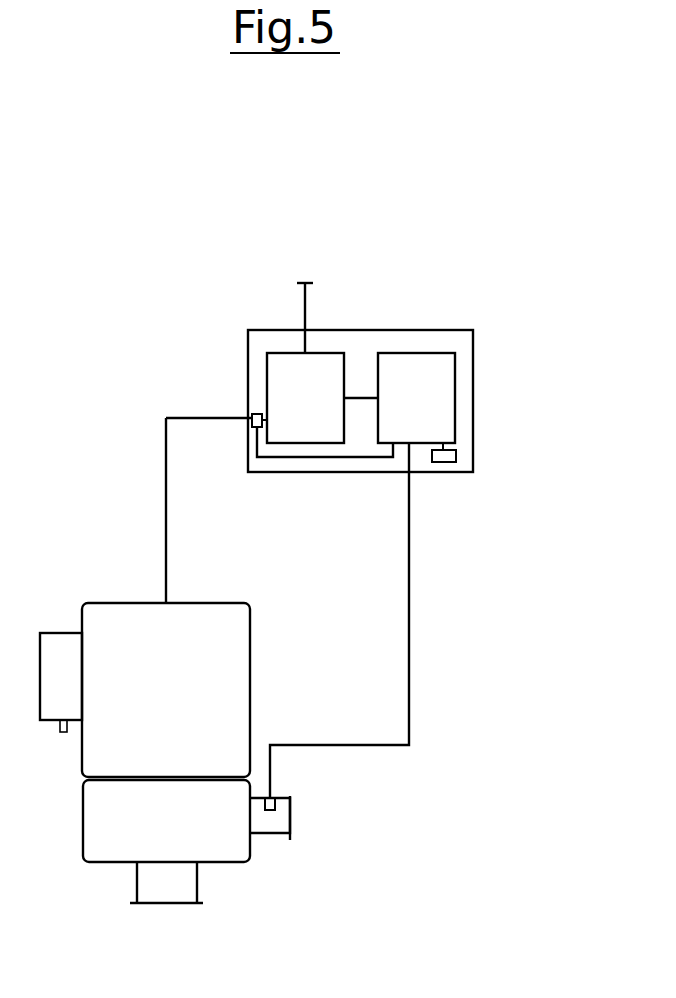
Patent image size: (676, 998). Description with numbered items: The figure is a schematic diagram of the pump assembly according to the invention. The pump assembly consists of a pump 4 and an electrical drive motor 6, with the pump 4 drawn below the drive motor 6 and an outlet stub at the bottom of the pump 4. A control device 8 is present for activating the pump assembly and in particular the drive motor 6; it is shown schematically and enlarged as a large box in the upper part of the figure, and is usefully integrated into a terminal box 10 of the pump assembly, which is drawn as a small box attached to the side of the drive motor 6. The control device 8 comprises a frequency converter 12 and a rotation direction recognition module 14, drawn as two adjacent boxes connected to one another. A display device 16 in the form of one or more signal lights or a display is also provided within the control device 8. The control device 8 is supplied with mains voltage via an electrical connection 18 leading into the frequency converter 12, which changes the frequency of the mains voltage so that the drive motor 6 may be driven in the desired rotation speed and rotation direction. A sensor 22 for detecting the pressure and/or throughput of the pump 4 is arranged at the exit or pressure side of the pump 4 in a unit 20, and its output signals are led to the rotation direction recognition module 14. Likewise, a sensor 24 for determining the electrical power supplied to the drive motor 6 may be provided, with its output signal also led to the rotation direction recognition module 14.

The pump 4 is at (153, 835).
The electrical drive motor 6 is at (152, 707).
The control device 8 is at (394, 330).
The terminal box 10 is at (61, 682).
The frequency converter 12 is at (305, 398).
The rotation direction recognition module 14 is at (416, 398).
The display device 16 is at (457, 453).
The electrical connection 18 is at (307, 297).
The actuator / valve unit 20 is at (293, 827).
The sensor 22 is at (277, 793).
The sensor 24 is at (250, 415).